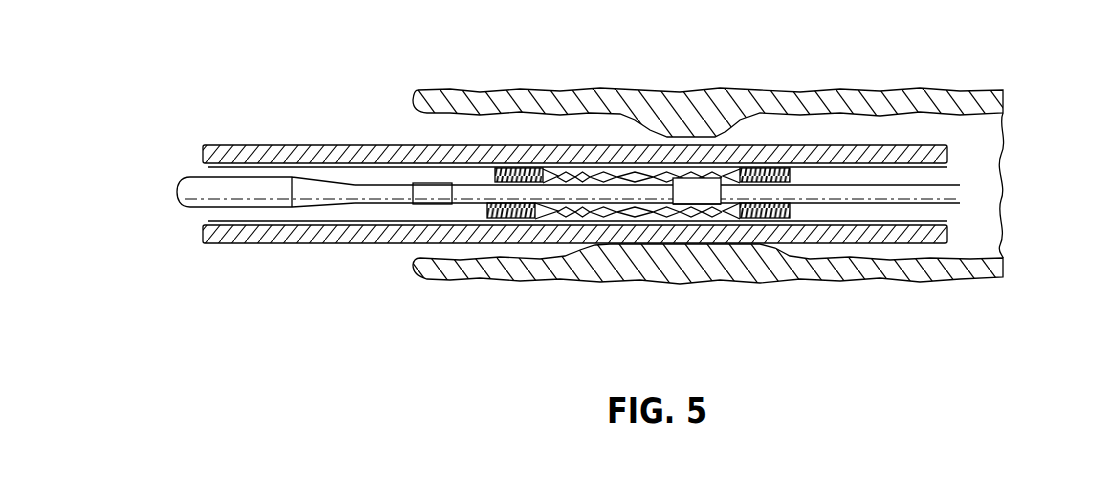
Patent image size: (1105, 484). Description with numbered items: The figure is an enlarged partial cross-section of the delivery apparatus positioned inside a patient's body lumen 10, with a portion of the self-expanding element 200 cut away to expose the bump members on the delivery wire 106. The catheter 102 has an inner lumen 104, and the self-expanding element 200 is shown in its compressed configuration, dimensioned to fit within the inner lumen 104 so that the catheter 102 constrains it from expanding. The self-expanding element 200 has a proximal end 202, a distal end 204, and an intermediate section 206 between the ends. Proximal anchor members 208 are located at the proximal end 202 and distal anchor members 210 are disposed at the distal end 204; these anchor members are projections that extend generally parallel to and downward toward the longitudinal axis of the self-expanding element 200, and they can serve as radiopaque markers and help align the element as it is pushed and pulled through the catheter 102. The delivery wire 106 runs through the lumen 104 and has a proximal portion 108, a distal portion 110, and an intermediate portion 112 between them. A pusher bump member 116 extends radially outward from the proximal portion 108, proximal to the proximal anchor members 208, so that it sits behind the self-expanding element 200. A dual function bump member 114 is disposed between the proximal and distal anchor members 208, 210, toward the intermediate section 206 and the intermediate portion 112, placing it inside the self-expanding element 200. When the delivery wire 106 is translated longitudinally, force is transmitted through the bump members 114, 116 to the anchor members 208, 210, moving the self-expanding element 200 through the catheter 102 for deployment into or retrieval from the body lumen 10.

The body lumen 10 is at (634, 88).
The catheter 102 is at (308, 145).
The inner lumen 104 is at (940, 177).
The delivery wire 106 is at (343, 199).
The proximal portion 108 is at (528, 200).
The distal portion 110 is at (753, 203).
The intermediate portion 112 is at (638, 194).
The dual function bump member 114 is at (700, 204).
The pusher bump member 116 is at (417, 205).
The self-expanding element 200 is at (645, 183).
The proximal end 202 is at (557, 168).
The distal end 204 is at (718, 214).
The intermediate section 206 is at (640, 172).
The proximal anchor members 208 is at (523, 168).
The distal anchor members 210 is at (788, 168).